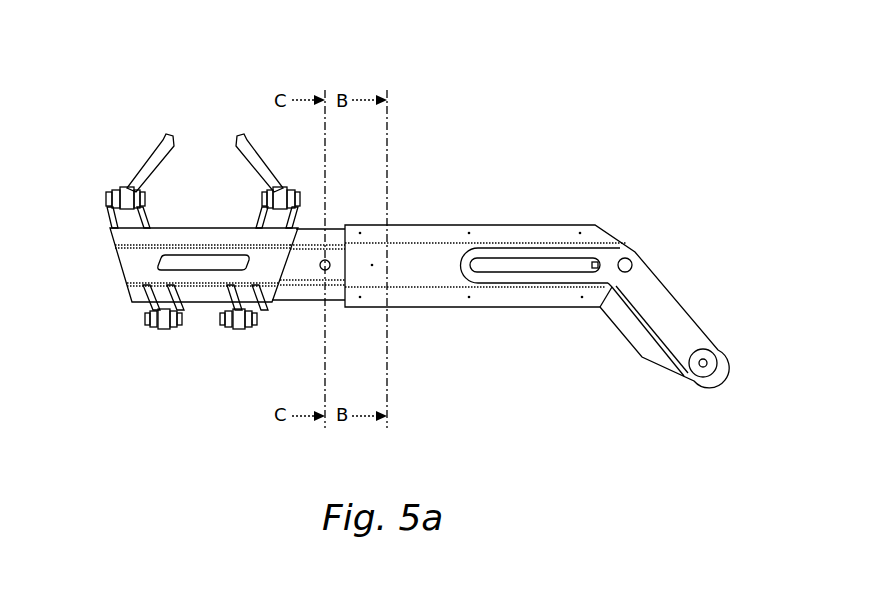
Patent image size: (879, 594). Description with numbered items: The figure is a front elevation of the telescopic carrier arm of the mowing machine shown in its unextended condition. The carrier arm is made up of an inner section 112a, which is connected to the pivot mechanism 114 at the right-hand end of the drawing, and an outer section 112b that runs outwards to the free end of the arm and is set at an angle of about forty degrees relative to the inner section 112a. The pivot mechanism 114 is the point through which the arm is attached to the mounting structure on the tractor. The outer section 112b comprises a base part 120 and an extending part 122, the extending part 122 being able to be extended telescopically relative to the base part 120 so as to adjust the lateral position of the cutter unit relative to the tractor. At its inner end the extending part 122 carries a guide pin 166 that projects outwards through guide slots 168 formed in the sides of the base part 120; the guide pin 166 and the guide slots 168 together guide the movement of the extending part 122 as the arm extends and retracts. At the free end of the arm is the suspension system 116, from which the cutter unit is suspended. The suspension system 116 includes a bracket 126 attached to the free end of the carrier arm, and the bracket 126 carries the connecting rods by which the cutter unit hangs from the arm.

The suspension system 116 is at (151, 92).
The bracket 126 is at (218, 232).
The extending part 122 is at (313, 233).
The base part 120 is at (422, 232).
The outer section 112b is at (563, 235).
The inner section 112a is at (685, 310).
The pivot mechanism 114 is at (706, 360).
The guide slots 168 is at (507, 272).
The guide pin 166 is at (590, 272).